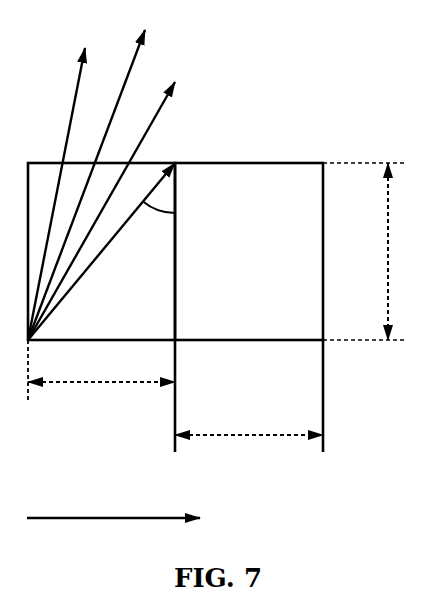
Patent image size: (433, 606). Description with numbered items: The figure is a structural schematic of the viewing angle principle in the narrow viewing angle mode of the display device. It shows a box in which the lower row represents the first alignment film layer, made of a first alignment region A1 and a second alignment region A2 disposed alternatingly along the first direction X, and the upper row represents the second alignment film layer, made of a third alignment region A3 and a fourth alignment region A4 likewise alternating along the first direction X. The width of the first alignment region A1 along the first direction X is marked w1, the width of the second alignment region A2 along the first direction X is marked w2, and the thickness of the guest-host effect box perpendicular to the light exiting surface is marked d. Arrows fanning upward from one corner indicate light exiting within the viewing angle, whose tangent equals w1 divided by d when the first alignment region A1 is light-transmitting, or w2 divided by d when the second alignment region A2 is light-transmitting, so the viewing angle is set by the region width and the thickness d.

The first alignment region A1 is at (101, 251).
The second alignment region A2 is at (249, 251).
The third alignment region A3 is at (101, 185).
The fourth alignment region A4 is at (249, 309).
The thickness of the guest-host effect box d is at (368, 251).
The width of the first alignment region w1 is at (101, 378).
The width of the second alignment region w2 is at (249, 416).
The first direction X is at (129, 519).